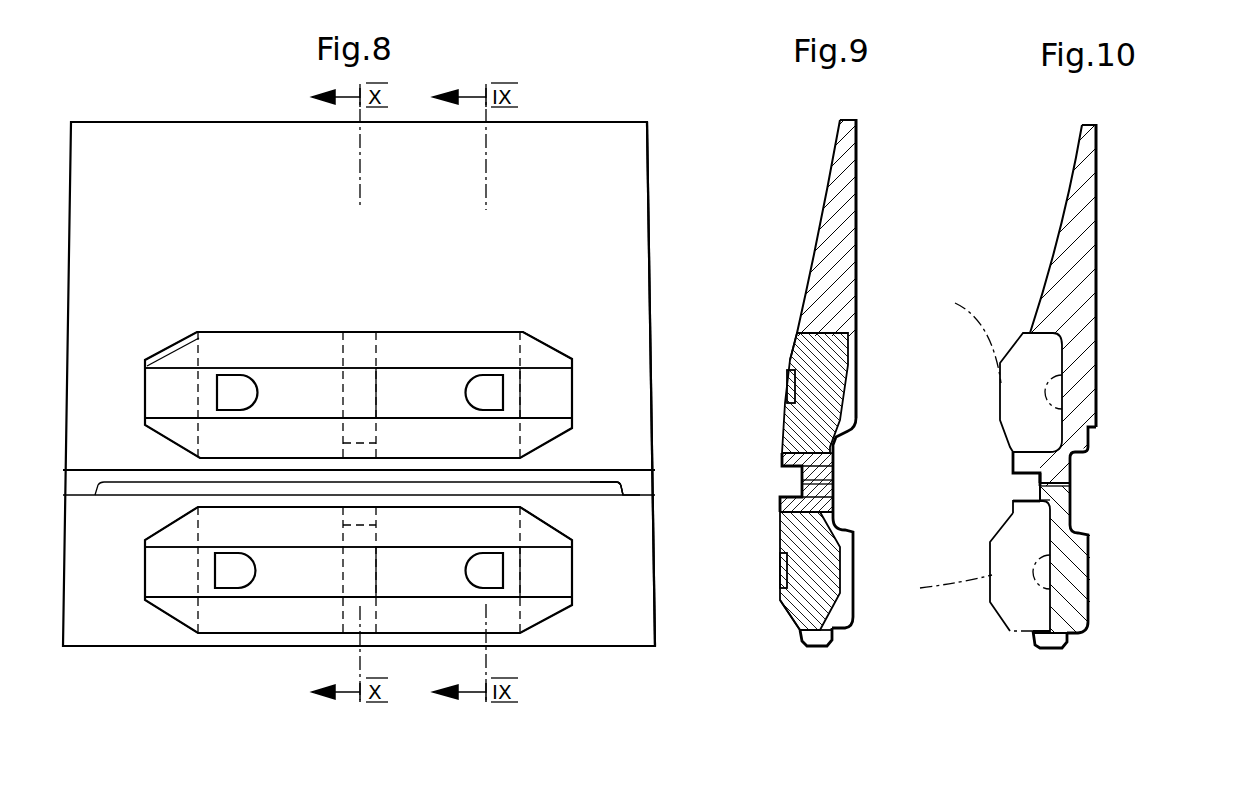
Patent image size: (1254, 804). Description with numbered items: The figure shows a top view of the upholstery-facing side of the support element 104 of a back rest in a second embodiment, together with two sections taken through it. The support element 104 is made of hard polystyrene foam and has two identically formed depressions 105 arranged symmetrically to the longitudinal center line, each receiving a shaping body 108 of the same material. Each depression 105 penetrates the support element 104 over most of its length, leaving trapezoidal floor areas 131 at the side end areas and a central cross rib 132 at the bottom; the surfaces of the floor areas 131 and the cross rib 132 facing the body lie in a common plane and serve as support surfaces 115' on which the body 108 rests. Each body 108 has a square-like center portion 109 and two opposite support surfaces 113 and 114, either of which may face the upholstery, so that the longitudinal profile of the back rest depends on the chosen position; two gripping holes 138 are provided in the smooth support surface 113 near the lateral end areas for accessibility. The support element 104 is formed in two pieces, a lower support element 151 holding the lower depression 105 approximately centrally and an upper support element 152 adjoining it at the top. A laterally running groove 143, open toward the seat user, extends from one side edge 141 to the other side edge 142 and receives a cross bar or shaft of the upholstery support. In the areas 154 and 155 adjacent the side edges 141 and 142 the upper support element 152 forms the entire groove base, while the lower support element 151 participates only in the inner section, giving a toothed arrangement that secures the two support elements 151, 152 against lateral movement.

In FIG. 8, the support element 104 is at (678, 502).
In FIG. 9, the support element 104 is at (878, 400).
In FIG. 10, the support element 104 is at (1100, 457).
In FIG. 8, the depression 105 is at (540, 333).
In FIG. 9, the depression 105 is at (797, 333).
In FIG. 10, the depression 105 is at (1012, 447).
In FIG. 8, the shaping body 108 is at (233, 355).
In FIG. 9, the shaping body 108 is at (803, 350).
In FIG. 10, the shaping body 108 is at (1010, 385).
In FIG. 8, the center portion 109 is at (415, 390).
In FIG. 9, the support surface 113 is at (790, 357).
In FIG. 10, the support surface 114 is at (942, 445).
In FIG. 8, the support surface 115' is at (442, 506).
In FIG. 8, the floor area 131 is at (103, 300).
In FIG. 8, the cross rib 132 is at (445, 705).
In FIG. 9, the cross rib 132 is at (860, 432).
In FIG. 10, the cross rib 132 is at (1075, 400).
In FIG. 8, the gripping hole 138 is at (245, 385).
In FIG. 9, the gripping hole 138 is at (780, 390).
In FIG. 10, the gripping hole 138 is at (1065, 545).
In FIG. 8, the side edge 141 is at (53, 523).
In FIG. 8, the side edge 142 is at (652, 165).
In FIG. 8, the groove 143 is at (612, 492).
In FIG. 9, the groove 143 is at (782, 474).
In FIG. 10, the groove 143 is at (1015, 496).
In FIG. 8, the lower support element 151 is at (627, 613).
In FIG. 9, the lower support element 151 is at (817, 645).
In FIG. 10, the lower support element 151 is at (1037, 640).
In FIG. 8, the upper support element 152 is at (588, 143).
In FIG. 9, the upper support element 152 is at (833, 250).
In FIG. 10, the upper support element 152 is at (1085, 305).
In FIG. 8, the area 154 is at (82, 483).
In FIG. 8, the area 155 is at (643, 483).